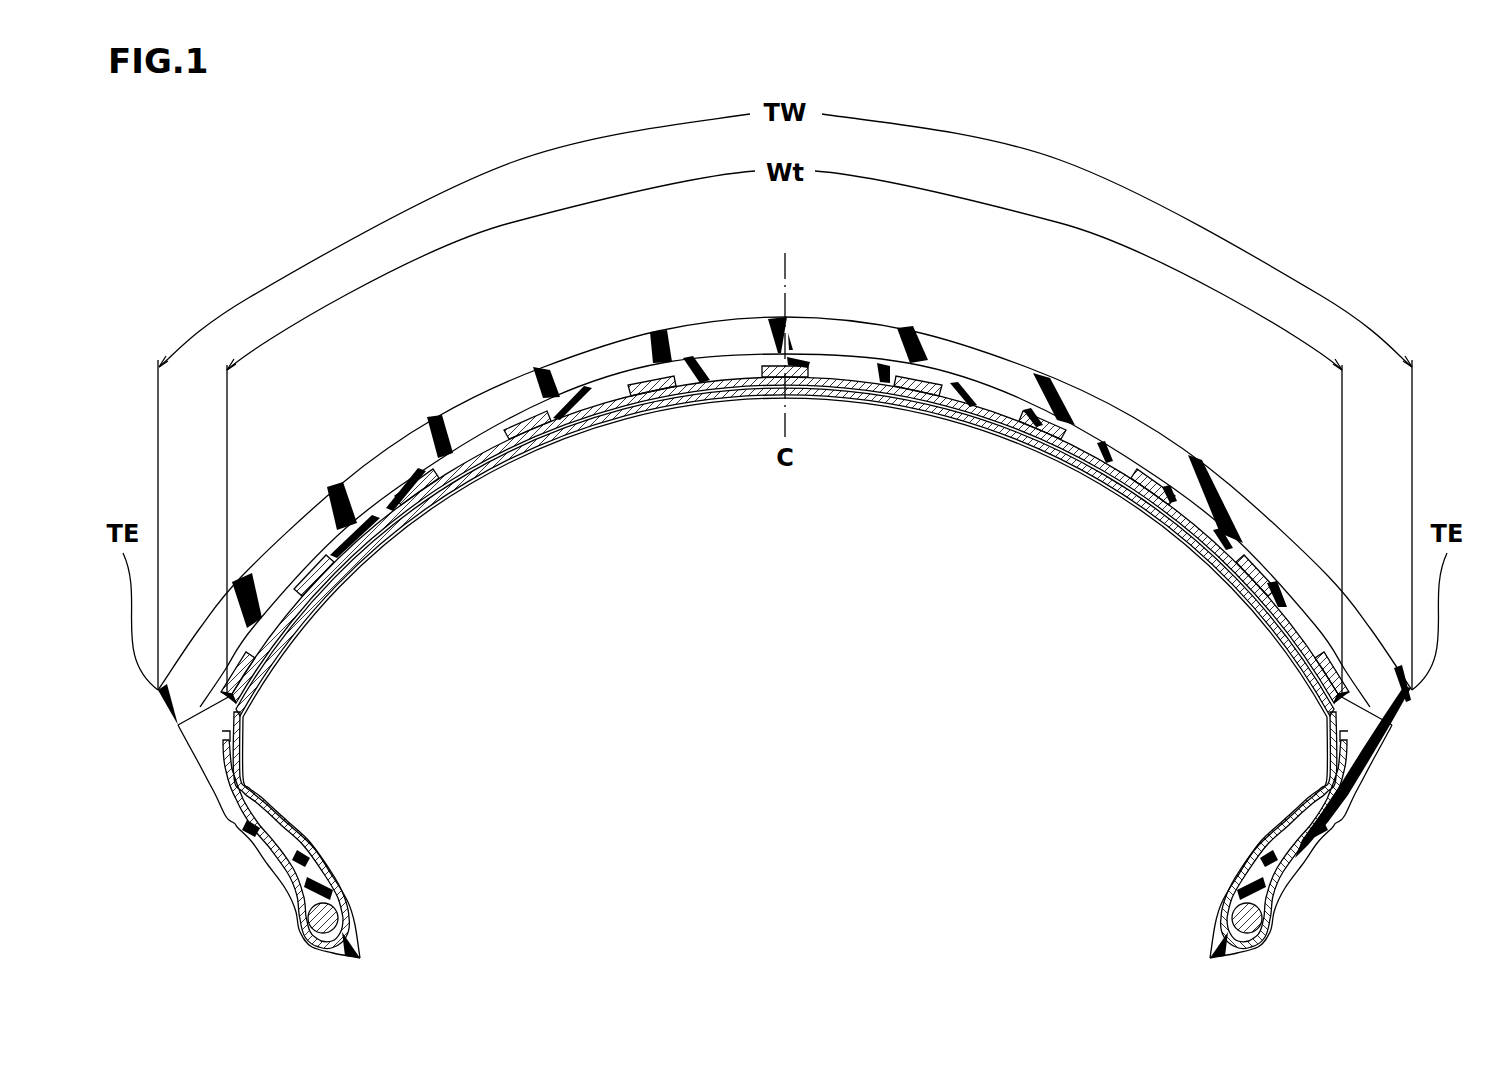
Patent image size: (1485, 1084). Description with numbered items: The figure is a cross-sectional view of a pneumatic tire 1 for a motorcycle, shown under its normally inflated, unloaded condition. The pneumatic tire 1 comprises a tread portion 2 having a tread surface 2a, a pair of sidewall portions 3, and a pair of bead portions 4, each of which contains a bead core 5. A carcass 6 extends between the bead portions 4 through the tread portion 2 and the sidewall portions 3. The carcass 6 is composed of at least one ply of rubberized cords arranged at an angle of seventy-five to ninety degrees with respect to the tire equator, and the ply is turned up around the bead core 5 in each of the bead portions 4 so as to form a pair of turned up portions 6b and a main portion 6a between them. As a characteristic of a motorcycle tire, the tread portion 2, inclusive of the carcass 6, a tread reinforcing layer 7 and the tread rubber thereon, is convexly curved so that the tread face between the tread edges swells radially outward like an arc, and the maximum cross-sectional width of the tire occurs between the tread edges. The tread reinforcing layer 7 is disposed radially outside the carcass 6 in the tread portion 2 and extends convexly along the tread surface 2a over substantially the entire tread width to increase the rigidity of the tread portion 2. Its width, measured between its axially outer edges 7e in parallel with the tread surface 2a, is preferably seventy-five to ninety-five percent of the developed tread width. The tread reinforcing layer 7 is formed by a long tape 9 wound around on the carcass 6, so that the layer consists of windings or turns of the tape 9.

The pneumatic tire 1 is at (1291, 211).
The tread portion 2 is at (1179, 373).
The tread surface 2a is at (478, 383).
The sidewall portions 3 is at (1362, 836).
The bead portions 4 is at (1290, 931).
The bead core 5 is at (1238, 912).
The carcass 6 is at (1183, 722).
The main portion 6a is at (1331, 735).
The turned up portions 6b is at (1327, 800).
The tread reinforcing layer 7 is at (333, 580).
The axially outer edges 7e is at (1342, 696).
The long tape 9 is at (1020, 417).